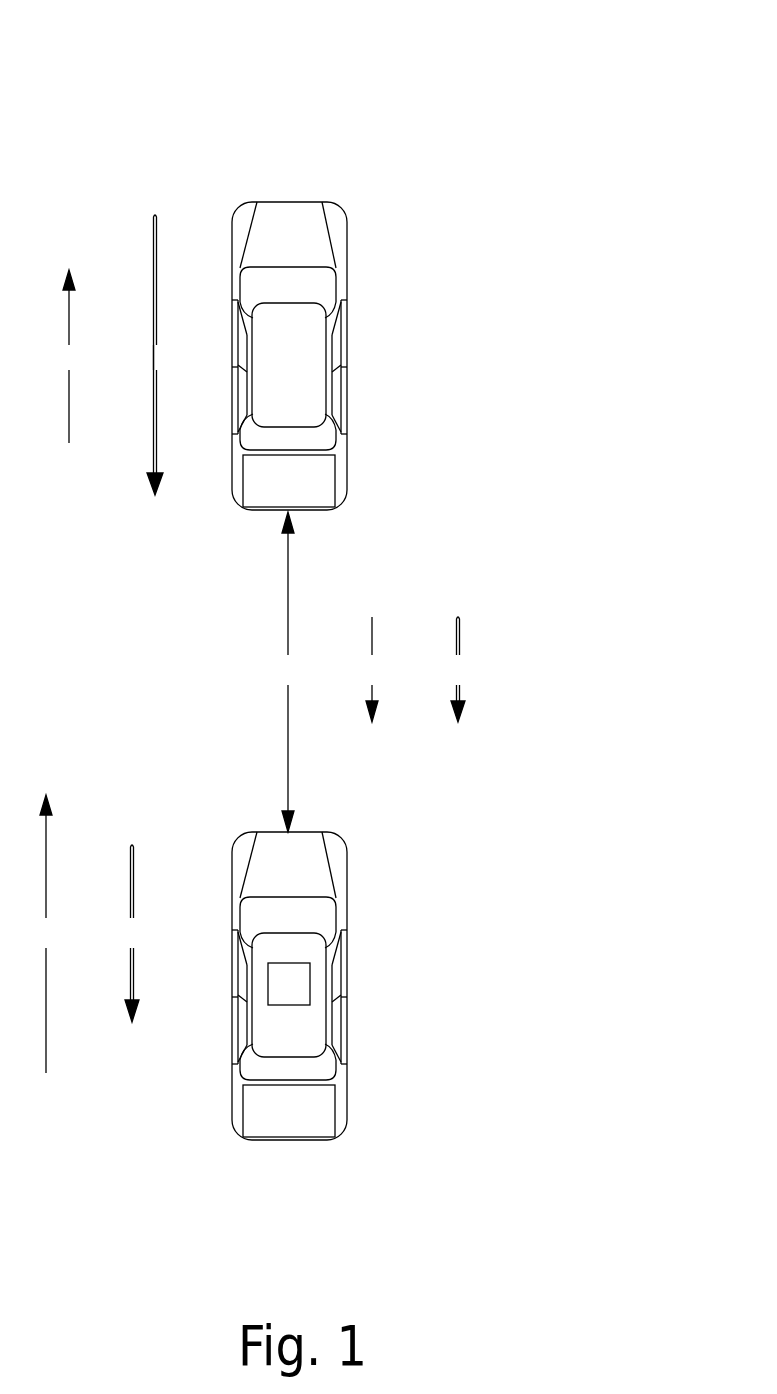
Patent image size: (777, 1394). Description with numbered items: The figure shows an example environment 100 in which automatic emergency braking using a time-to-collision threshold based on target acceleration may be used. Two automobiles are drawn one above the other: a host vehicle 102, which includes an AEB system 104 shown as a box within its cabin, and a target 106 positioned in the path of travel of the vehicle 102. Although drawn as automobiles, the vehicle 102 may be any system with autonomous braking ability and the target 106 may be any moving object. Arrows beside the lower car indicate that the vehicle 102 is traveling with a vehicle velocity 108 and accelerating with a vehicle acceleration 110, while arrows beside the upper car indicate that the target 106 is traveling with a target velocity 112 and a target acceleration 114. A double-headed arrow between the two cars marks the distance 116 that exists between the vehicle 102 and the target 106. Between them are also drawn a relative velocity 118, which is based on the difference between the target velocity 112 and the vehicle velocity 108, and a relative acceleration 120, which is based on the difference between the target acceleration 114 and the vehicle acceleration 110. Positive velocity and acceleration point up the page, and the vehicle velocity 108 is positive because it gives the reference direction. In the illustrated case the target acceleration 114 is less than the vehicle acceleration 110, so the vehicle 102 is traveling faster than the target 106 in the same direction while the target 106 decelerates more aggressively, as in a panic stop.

The environment 100 is at (648, 40).
The vehicle 102 is at (340, 840).
The AEB system 104 is at (311, 983).
The target 106 is at (340, 210).
The vehicle velocity 108 is at (46, 934).
The vehicle acceleration 110 is at (132, 933).
The target velocity 112 is at (69, 356).
The target acceleration 114 is at (155, 355).
The distance 116 is at (288, 672).
The relative velocity 118 is at (372, 669).
The relative acceleration 120 is at (458, 669).